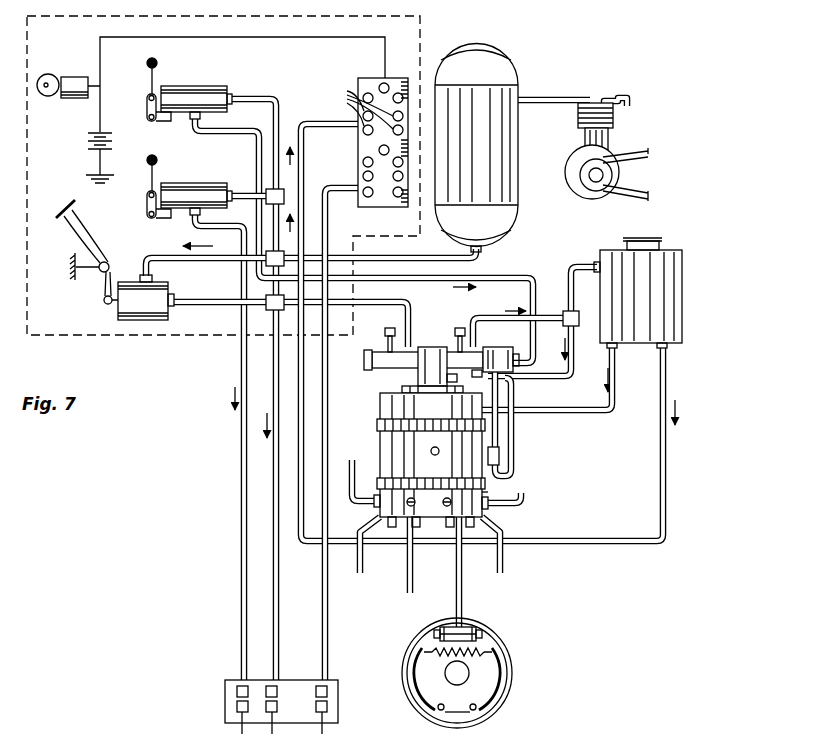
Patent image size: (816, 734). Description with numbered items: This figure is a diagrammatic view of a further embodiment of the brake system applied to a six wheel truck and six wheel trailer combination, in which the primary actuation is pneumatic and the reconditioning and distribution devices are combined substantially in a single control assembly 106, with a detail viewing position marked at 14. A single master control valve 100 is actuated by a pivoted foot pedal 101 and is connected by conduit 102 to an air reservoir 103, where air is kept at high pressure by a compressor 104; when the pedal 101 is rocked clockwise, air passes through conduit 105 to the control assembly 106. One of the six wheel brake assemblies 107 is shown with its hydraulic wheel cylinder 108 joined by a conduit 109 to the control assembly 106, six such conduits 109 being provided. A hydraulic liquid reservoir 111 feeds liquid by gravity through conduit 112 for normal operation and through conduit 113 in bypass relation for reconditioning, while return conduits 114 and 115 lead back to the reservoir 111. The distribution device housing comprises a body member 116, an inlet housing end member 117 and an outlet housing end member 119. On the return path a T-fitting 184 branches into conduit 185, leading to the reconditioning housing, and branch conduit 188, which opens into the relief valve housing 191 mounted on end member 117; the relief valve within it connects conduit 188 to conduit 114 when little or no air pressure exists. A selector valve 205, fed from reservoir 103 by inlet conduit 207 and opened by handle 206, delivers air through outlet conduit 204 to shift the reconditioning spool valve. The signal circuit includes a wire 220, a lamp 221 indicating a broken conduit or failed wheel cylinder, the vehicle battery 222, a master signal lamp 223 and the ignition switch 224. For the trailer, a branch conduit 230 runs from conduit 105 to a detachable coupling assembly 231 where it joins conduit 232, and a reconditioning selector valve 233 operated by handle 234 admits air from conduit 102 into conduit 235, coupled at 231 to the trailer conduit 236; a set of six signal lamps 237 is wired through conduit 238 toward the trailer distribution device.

The control valve assembly 14 is at (441, 364).
The master control valve 100 is at (144, 322).
The foot pedal 101 is at (97, 237).
The conduit 102 is at (213, 259).
The reservoir 103 is at (500, 58).
The compressor 104 is at (606, 155).
The conduit 105 is at (409, 305).
The control assembly 106 is at (459, 460).
The wheel brake assembly 107 is at (490, 670).
The hydraulic wheel cylinder 108 is at (478, 628).
The conduit 109 is at (359, 503).
The reservoir 111 is at (682, 297).
The conduit 112 is at (572, 412).
The conduit 113 is at (665, 493).
The return conduit 114 is at (574, 352).
The return conduit 115 is at (491, 318).
The housing body member 116 is at (446, 479).
The inlet housing end member 117 is at (380, 401).
The outlet housing end member 119 is at (488, 491).
The T-fitting 184 is at (499, 455).
The conduit 185 is at (512, 472).
The branch conduit 188 is at (509, 389).
The relief valve housing 191 is at (418, 380).
The air pressure outlet conduit 204 is at (503, 277).
The selector valve 205 is at (199, 91).
The operating handle 206 is at (157, 63).
The inlet conduit 207 is at (261, 98).
The wire 220 is at (385, 545).
The lamp 221 is at (355, 108).
The vehicle battery 222 is at (112, 141).
The master signal lamp 223 is at (388, 83).
The ignition switch 224 is at (72, 78).
The branch conduit 230 is at (273, 522).
The detachable coupling assembly 231 is at (282, 704).
The conduit 232 is at (277, 712).
The reconditioning selector valve 233 is at (190, 184).
The handle 234 is at (147, 168).
The conduit 235 is at (241, 449).
The conduit 236 is at (237, 716).
The signal lamps 237 is at (369, 141).
The conduit 238 is at (328, 648).